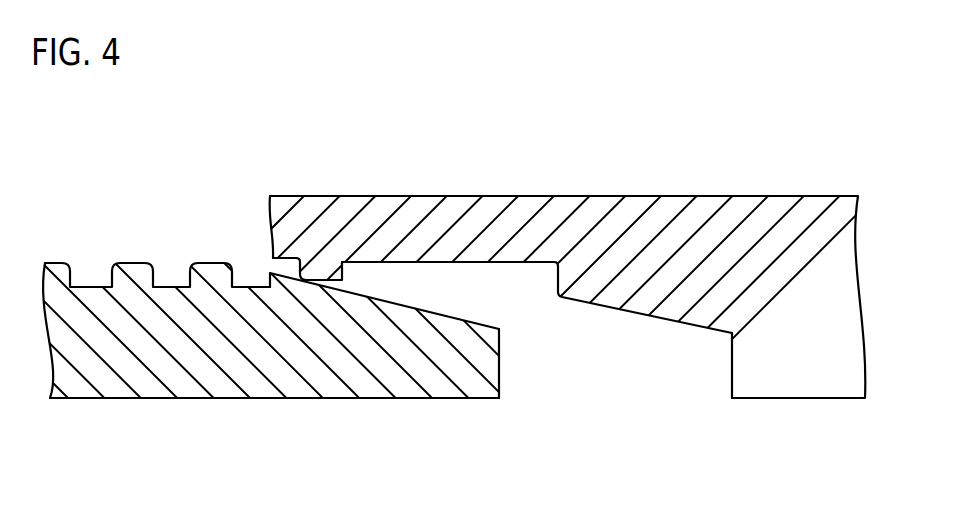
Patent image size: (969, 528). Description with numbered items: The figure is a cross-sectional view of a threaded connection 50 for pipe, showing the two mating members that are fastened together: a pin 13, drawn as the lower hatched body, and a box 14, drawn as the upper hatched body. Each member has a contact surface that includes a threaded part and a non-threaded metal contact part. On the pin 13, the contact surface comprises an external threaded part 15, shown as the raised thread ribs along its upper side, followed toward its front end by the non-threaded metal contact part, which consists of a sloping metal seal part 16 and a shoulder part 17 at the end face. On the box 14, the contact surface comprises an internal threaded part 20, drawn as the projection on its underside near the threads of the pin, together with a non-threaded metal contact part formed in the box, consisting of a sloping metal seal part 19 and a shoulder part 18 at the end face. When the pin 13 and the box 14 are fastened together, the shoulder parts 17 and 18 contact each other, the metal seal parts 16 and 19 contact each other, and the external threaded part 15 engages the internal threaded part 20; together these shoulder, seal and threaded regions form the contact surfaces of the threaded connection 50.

The threaded connection for pipe 50 is at (521, 107).
The pin 13 is at (255, 422).
The box 14 is at (688, 192).
The external threaded part 15 is at (133, 265).
The metal seal part 16 is at (397, 307).
The shoulder part 17 is at (501, 358).
The shoulder part 18 is at (731, 356).
The metal seal part 19 is at (628, 313).
The internal threaded part 20 is at (300, 262).